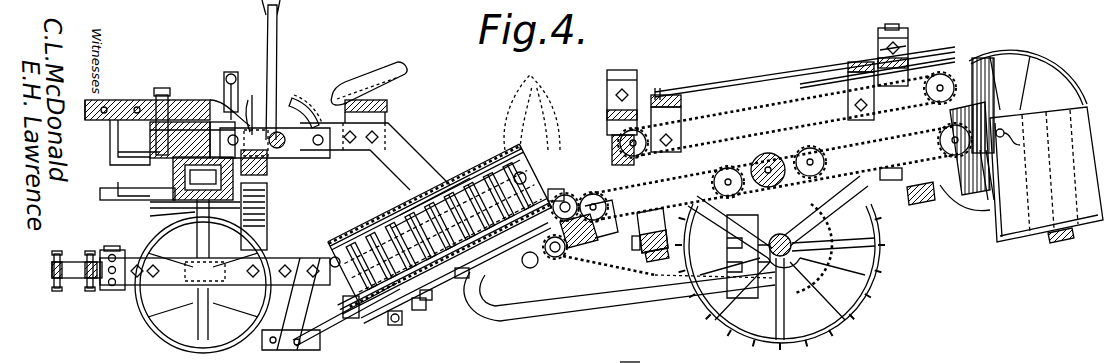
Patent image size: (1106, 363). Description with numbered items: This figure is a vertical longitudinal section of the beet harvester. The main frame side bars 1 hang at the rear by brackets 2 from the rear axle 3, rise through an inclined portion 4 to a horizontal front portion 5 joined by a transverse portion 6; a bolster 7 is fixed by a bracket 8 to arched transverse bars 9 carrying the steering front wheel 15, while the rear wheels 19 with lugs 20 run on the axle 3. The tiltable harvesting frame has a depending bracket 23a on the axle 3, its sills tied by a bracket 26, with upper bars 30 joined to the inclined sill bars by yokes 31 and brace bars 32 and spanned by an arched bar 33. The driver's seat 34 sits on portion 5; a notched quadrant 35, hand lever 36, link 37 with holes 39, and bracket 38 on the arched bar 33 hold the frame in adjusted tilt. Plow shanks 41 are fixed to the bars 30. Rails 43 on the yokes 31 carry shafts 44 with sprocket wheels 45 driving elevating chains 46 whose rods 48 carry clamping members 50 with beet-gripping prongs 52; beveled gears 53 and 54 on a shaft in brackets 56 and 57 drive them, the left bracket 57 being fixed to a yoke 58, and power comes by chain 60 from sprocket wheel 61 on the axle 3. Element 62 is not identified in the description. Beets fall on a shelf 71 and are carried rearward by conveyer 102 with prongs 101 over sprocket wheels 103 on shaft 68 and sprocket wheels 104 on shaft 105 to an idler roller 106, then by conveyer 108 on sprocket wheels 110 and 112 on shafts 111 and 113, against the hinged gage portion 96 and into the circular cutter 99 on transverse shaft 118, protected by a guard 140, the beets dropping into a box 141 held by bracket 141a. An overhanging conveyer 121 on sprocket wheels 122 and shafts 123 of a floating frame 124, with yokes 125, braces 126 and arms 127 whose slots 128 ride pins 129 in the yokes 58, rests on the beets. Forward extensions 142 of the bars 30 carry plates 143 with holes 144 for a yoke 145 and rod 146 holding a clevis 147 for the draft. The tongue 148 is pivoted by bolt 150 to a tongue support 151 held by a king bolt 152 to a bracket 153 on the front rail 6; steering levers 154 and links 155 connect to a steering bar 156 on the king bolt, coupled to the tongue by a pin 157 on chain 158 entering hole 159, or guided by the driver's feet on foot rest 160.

The side bars 1 is at (606, 300).
The brackets 2 is at (792, 262).
The rear axle 3 is at (800, 258).
The inclined portion 4 is at (402, 158).
The front portion 5 is at (270, 178).
The transverse portion 6 is at (160, 142).
The bolster 7 is at (178, 162).
The bracket 8 is at (176, 197).
The transverse supporting bars 9 is at (150, 216).
The front wheel 15 is at (150, 318).
The rear wheels 19 is at (865, 296).
The lugs 20 is at (846, 328).
The depending bracket 23a is at (831, 248).
The bracket 26 is at (636, 248).
The bars 30 is at (333, 260).
The yokes 31 is at (430, 300).
The inclined brace bars 32 is at (352, 300).
The arcuate bar 33 is at (264, 206).
The driver's seat 34 is at (373, 72).
The notched quadrant 35 is at (283, 100).
The hand lever 36 is at (277, 55).
The link 37 is at (252, 96).
The bracket 38 is at (300, 152).
The holes 39 is at (314, 138).
The shanks 41 is at (290, 325).
The rails 43 is at (394, 212).
The shafts 44 is at (393, 326).
The sprocket wheels 45 is at (350, 240).
The sprocket chains 46 is at (440, 185).
The rods 48 is at (526, 172).
The inner clamping member 50 is at (462, 278).
The prongs 52 is at (541, 163).
The beveled gears 53 is at (522, 266).
The beveled gear 54 is at (550, 260).
The bracket 56 is at (566, 266).
The bracket 57 is at (592, 234).
The yokes 58 is at (907, 66).
The sprocket chain 60 is at (627, 289).
The sprocket wheel 61 is at (734, 260).
The sprocket wheel 62 is at (573, 195).
The shaft 68 is at (590, 228).
The shelf 71 is at (555, 189).
The hinged rear portion 96 is at (625, 152).
The circular cutter 99 is at (980, 72).
The prongs 101 is at (758, 202).
The conveyer 102 is at (652, 230).
The sprocket wheels 103 is at (608, 208).
The sprocket wheels 104 is at (716, 183).
The shaft 105 is at (714, 216).
The idler roller 106 is at (770, 188).
The conveyer 108 is at (890, 180).
The sprocket wheels 110 is at (826, 161).
The shaft 111 is at (858, 172).
The sprocket wheels 112 is at (945, 140).
The shaft 113 is at (985, 157).
The transverse shaft 118 is at (1012, 136).
The overhanging conveyer 121 is at (718, 112).
The sprocket wheels 122 is at (622, 138).
The shafts 123 is at (675, 142).
The frame 124 is at (792, 86).
The yokes 125 is at (662, 104).
The braces 126 is at (810, 80).
The upstanding arms 127 is at (612, 84).
The slots 128 is at (893, 32).
The pins 129 is at (905, 56).
The guard 140 is at (1060, 70).
The box 141 is at (1008, 246).
The bracket 141a is at (1060, 244).
The forward extensions 142 is at (200, 300).
The plates 143 is at (120, 290).
The holes 144 is at (112, 260).
The yoke 145 is at (85, 290).
The transverse bolt 146 is at (108, 280).
The clevis 147 is at (65, 262).
The tongue 148 is at (96, 122).
The horizontal pivot bolt 150 is at (130, 108).
The tongue support 151 is at (173, 104).
The king bolt 152 is at (160, 92).
The bracket 153 is at (160, 152).
The levers 154 is at (170, 206).
The links 155 is at (118, 186).
The steering bar 156 is at (140, 124).
The pin 157 is at (234, 72).
The chain 158 is at (226, 76).
The hole 159 is at (207, 124).
The foot rest 160 is at (220, 112).